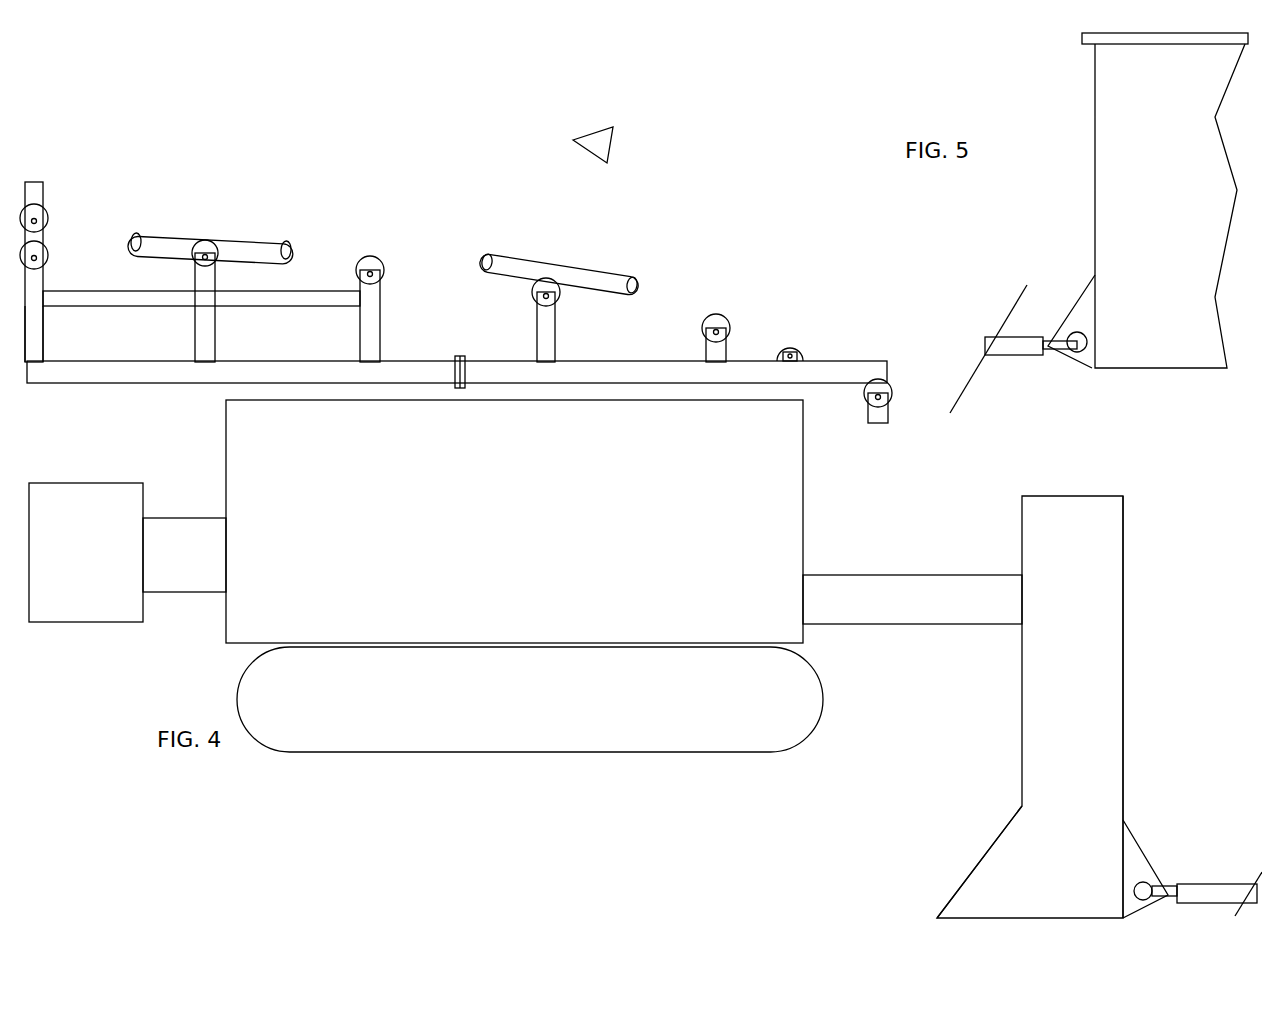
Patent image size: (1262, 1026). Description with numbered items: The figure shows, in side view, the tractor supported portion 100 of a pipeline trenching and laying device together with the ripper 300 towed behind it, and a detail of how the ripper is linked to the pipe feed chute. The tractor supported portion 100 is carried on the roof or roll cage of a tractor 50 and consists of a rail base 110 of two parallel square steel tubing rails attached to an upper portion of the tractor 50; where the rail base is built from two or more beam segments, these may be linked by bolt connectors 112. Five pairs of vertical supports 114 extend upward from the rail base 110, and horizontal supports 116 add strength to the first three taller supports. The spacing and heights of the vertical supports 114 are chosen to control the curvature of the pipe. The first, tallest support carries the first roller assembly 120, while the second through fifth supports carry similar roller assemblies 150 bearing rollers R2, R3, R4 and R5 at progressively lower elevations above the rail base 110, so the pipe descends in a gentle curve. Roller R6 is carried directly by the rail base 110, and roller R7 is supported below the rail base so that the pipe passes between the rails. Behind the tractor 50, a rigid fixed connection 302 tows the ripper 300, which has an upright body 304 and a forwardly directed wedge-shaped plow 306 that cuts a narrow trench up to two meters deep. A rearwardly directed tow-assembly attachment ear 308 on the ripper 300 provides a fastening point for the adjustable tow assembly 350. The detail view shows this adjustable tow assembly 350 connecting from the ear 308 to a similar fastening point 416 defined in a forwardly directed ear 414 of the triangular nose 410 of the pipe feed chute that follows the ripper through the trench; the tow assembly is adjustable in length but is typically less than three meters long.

In FIG. 4, the tractor supported portion 100 is at (594, 131).
In FIG. 4, the first roller assembly 120 is at (52, 199).
In FIG. 4, the horizontal supports 116 is at (117, 298).
In FIG. 4, the vertical supports 114 is at (37, 333).
In FIG. 4, the rail base 110 is at (80, 385).
In FIG. 4, the bolt connectors 112 is at (455, 350).
In FIG. 4, the roller R2 is at (203, 240).
In FIG. 4, the roller assemblies 150 is at (215, 235).
In FIG. 4, the roller R3 is at (368, 258).
In FIG. 4, the roller R4 is at (548, 282).
In FIG. 4, the roller R5 is at (716, 316).
In FIG. 4, the roller R6 is at (792, 342).
In FIG. 4, the roller R7 is at (878, 380).
In FIG. 4, the tractor 50 is at (352, 560).
In FIG. 4, the rigid fixed connection 302 is at (896, 605).
In FIG. 4, the ripper 300 is at (1047, 736).
In FIG. 4, the upright body 304 is at (1095, 622).
In FIG. 4, the wedge-shaped plow 306 is at (997, 873).
In FIG. 4, the tow-assembly attachment ear 308 is at (1138, 850).
In FIG. 4, the adjustable tow assembly 350 is at (1215, 885).
In FIG. 5, the adjustable tow assembly 350 is at (1022, 341).
In FIG. 5, the triangular nose 410 is at (1082, 98).
In FIG. 5, the forwardly directed ear 414 is at (1085, 305).
In FIG. 5, the fastening point 416 is at (1080, 350).